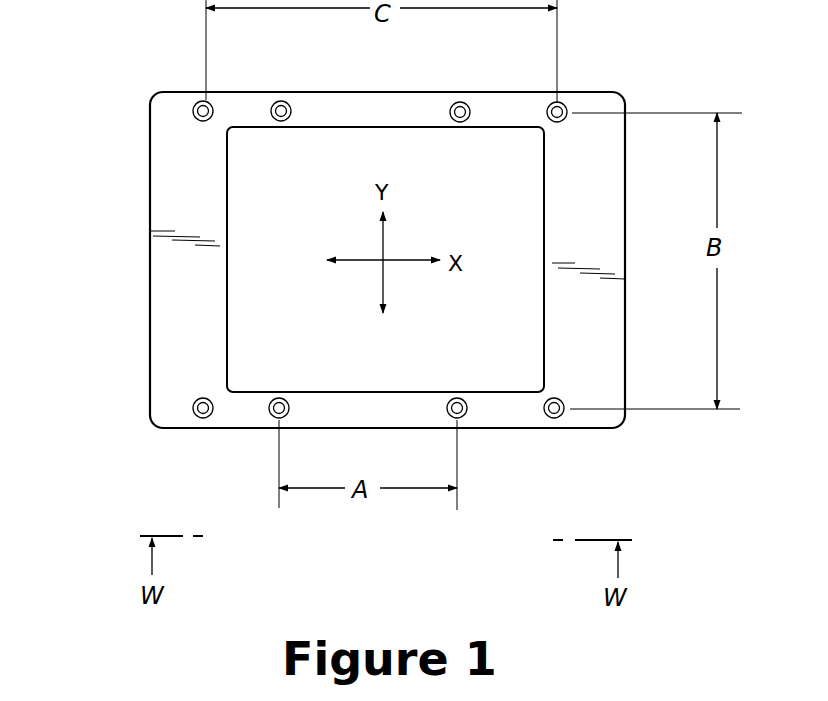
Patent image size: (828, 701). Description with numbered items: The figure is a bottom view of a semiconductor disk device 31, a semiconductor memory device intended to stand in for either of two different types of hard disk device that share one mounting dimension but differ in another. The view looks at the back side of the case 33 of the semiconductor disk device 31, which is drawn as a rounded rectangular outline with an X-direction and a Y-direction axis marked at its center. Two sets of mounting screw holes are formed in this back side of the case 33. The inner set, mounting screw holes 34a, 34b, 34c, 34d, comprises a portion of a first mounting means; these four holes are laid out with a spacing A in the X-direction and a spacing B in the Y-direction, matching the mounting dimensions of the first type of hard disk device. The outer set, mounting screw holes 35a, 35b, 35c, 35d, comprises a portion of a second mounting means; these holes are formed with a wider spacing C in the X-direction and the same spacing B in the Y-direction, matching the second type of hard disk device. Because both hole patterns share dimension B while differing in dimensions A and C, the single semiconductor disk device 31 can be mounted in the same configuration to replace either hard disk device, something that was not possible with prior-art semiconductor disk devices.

The semiconductor disk device 31 is at (122, 160).
The case 33 is at (165, 345).
The mounting screw hole 34a is at (462, 101).
The mounting screw hole 34b is at (281, 100).
The mounting screw hole 34c is at (461, 415).
The mounting screw hole 34d is at (276, 417).
The mounting screw hole 35a is at (563, 105).
The mounting screw hole 35b is at (197, 104).
The mounting screw hole 35c is at (558, 415).
The mounting screw hole 35d is at (198, 416).